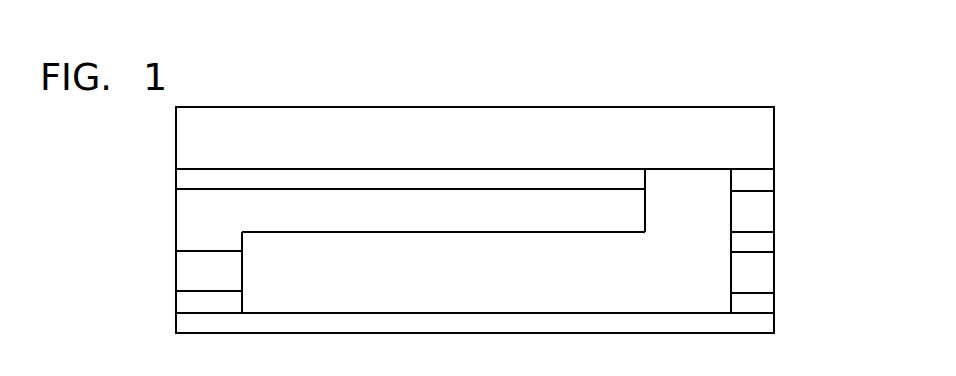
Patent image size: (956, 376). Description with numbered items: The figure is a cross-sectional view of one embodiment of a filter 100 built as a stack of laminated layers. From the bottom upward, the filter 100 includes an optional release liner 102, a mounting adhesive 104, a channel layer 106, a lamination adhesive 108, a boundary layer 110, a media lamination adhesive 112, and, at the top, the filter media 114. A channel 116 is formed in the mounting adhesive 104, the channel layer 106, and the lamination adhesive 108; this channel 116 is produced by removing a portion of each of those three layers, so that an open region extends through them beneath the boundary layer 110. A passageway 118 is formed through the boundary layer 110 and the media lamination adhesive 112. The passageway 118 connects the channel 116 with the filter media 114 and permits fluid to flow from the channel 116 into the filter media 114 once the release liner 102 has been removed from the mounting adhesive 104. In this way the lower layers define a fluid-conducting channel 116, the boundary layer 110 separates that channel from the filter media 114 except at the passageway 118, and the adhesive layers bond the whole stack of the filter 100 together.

The filter 100 is at (420, 103).
The release liner 102 is at (775, 330).
The mounting adhesive 104 is at (775, 304).
The channel layer 106 is at (775, 274).
The lamination adhesive 108 is at (775, 243).
The boundary layer 110 is at (775, 214).
The media lamination adhesive 112 is at (775, 182).
The filter media 114 is at (775, 141).
The channel 116 is at (273, 263).
The passageway 118 is at (663, 214).